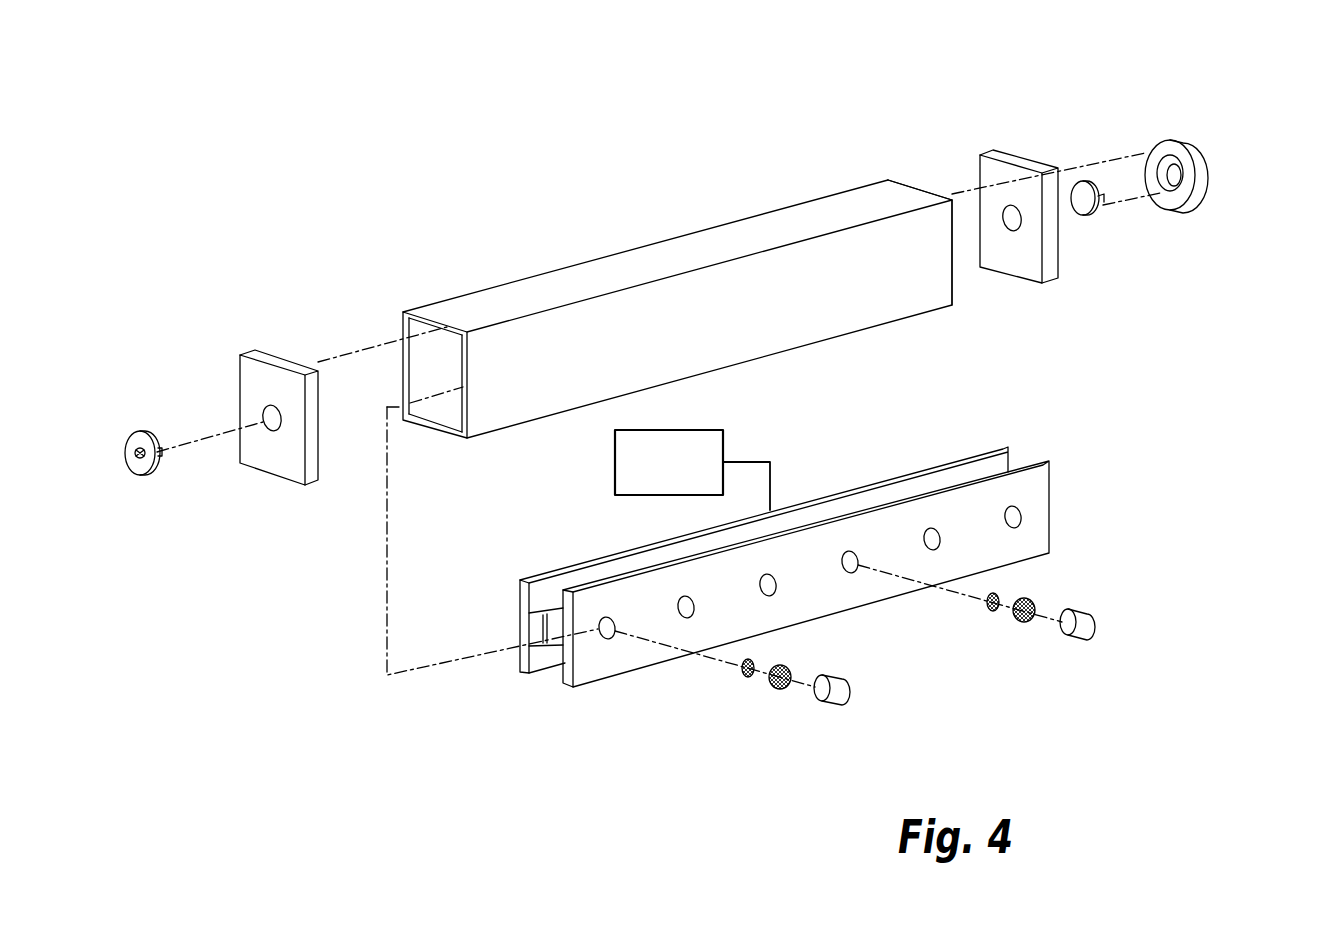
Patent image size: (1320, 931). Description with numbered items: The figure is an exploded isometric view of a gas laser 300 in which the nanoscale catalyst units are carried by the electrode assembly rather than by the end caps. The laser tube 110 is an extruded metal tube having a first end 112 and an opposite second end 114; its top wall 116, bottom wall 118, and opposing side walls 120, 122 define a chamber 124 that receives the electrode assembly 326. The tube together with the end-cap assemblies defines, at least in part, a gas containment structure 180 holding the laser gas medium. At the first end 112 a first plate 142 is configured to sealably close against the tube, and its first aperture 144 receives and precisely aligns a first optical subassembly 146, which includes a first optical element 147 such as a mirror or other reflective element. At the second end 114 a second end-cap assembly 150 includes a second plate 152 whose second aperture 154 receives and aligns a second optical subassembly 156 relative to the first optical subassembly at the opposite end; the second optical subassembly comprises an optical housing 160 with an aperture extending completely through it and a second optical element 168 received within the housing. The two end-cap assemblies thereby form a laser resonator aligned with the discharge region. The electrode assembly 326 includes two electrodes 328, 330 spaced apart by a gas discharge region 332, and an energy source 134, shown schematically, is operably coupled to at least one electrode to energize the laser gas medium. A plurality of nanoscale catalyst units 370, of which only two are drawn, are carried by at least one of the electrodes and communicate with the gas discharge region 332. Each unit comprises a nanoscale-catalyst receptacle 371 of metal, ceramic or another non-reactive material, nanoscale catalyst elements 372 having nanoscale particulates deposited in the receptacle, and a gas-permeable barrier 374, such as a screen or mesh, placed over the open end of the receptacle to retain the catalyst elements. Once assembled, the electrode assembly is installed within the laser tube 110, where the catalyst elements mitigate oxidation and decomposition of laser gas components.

The gas laser 300 is at (485, 105).
The laser tube 110 is at (645, 243).
The first end 112 is at (408, 305).
The second end 114 is at (922, 176).
The top wall 116 is at (452, 308).
The bottom wall 118 is at (440, 433).
The side wall 120 is at (403, 330).
The side wall 122 is at (487, 385).
The chamber 124 is at (452, 362).
The gas containment structure 180 is at (563, 243).
The energy source 134 is at (690, 430).
The first plate 142 is at (258, 355).
The first aperture 144 is at (270, 430).
The first optical subassembly 146 is at (118, 485).
The first optical element 147 is at (148, 474).
The second end-cap assembly 150 is at (1133, 255).
The second plate 152 is at (1013, 155).
The second aperture 154 is at (1008, 222).
The second optical subassembly 156 is at (1165, 232).
The optical housing 160 is at (1198, 162).
The second optical element 168 is at (1078, 215).
The electrode assembly 326 is at (670, 742).
The electrode 328 is at (528, 655).
The electrode 330 is at (565, 680).
The gas discharge region 332 is at (547, 677).
The nanoscale catalyst unit 370 is at (793, 712).
The nanoscale-catalyst receptacle 371 is at (850, 692).
The nanoscale catalyst elements 372 is at (790, 672).
The gas-permeable barrier 374 is at (748, 680).